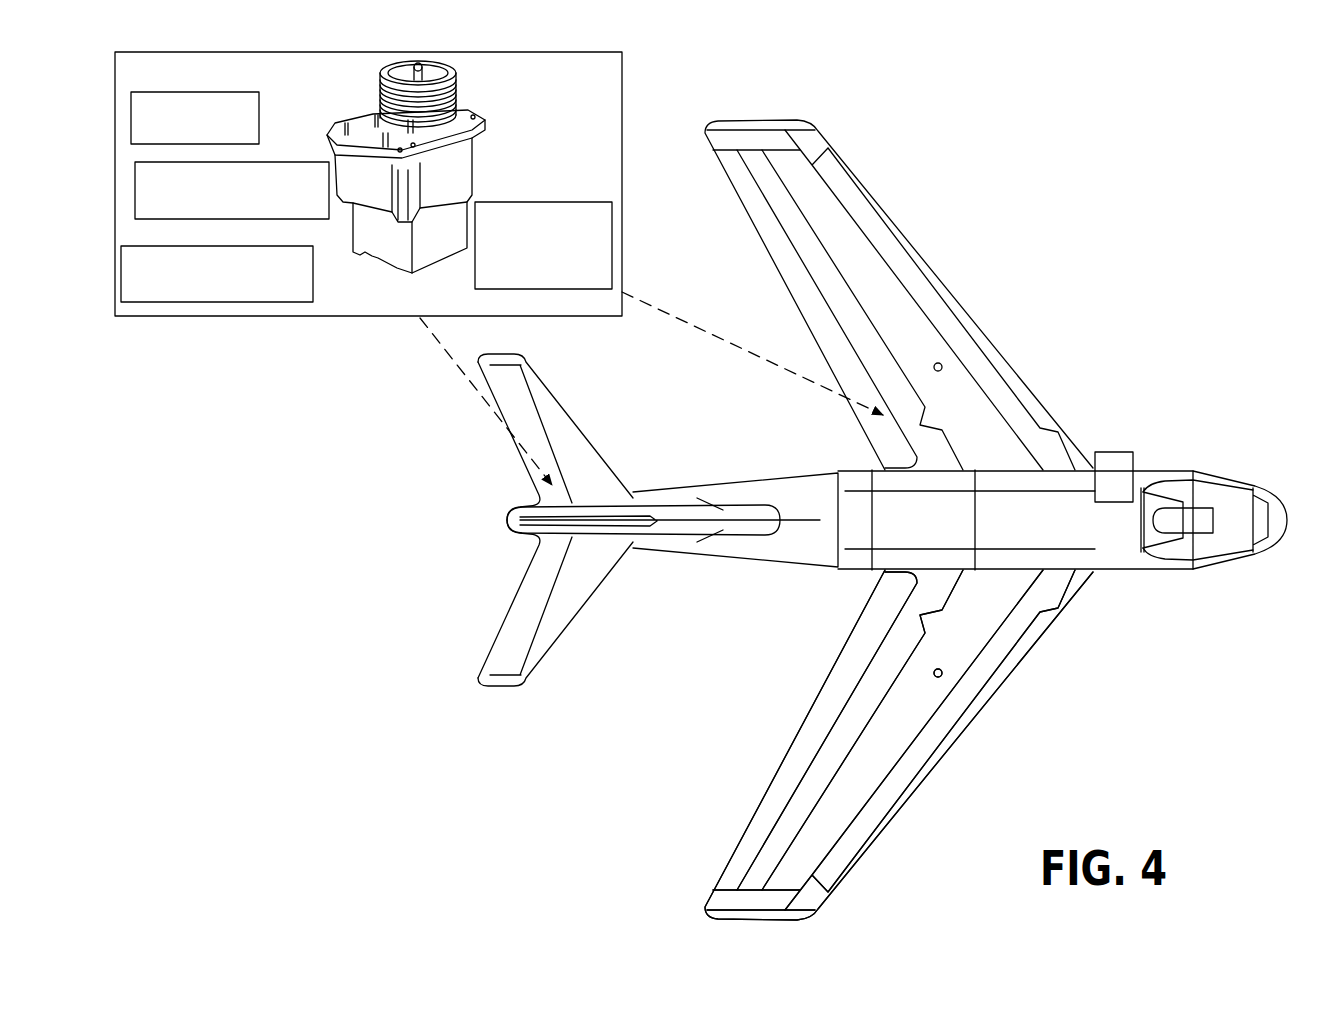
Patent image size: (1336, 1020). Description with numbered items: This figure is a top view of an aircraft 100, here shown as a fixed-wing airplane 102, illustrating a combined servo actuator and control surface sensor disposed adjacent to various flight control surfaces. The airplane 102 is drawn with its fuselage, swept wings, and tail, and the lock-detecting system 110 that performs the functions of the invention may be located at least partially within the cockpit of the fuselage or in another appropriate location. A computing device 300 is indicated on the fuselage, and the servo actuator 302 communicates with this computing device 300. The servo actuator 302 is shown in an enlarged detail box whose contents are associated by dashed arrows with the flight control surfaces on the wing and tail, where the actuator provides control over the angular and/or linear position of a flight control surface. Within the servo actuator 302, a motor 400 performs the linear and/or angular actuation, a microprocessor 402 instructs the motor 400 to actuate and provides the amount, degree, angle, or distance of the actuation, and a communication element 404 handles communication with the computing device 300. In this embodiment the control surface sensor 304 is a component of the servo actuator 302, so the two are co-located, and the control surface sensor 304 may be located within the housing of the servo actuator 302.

The aircraft 100 is at (1198, 702).
The airplane 102 is at (1095, 605).
The lock-detecting system 110 is at (1213, 387).
The computing device 300 is at (1112, 451).
The servo actuator 302 is at (621, 53).
The control surface sensor 304 is at (540, 202).
The motor 400 is at (220, 92).
The microprocessor 402 is at (276, 162).
The communication element 404 is at (316, 280).